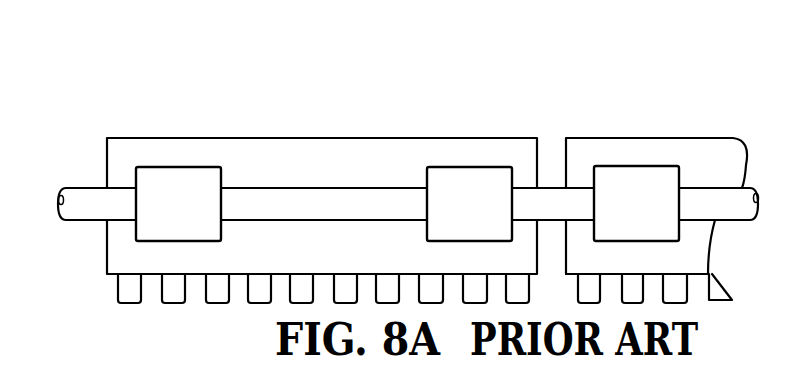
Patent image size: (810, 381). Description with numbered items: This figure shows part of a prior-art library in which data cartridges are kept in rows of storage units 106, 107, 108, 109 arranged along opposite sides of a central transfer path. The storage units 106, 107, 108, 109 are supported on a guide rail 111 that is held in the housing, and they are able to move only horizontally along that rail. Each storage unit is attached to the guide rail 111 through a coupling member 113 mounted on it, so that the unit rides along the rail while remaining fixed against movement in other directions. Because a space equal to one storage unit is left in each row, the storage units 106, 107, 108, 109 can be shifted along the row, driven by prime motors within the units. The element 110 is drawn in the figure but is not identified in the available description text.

The storage unit 106 is at (375, 142).
The storage unit 107 is at (392, 164).
The storage unit 108 is at (392, 164).
The storage unit 109 is at (107, 255).
The external leads 110 is at (122, 303).
The guide rail 111 is at (548, 185).
The coupling member 113 is at (200, 166).